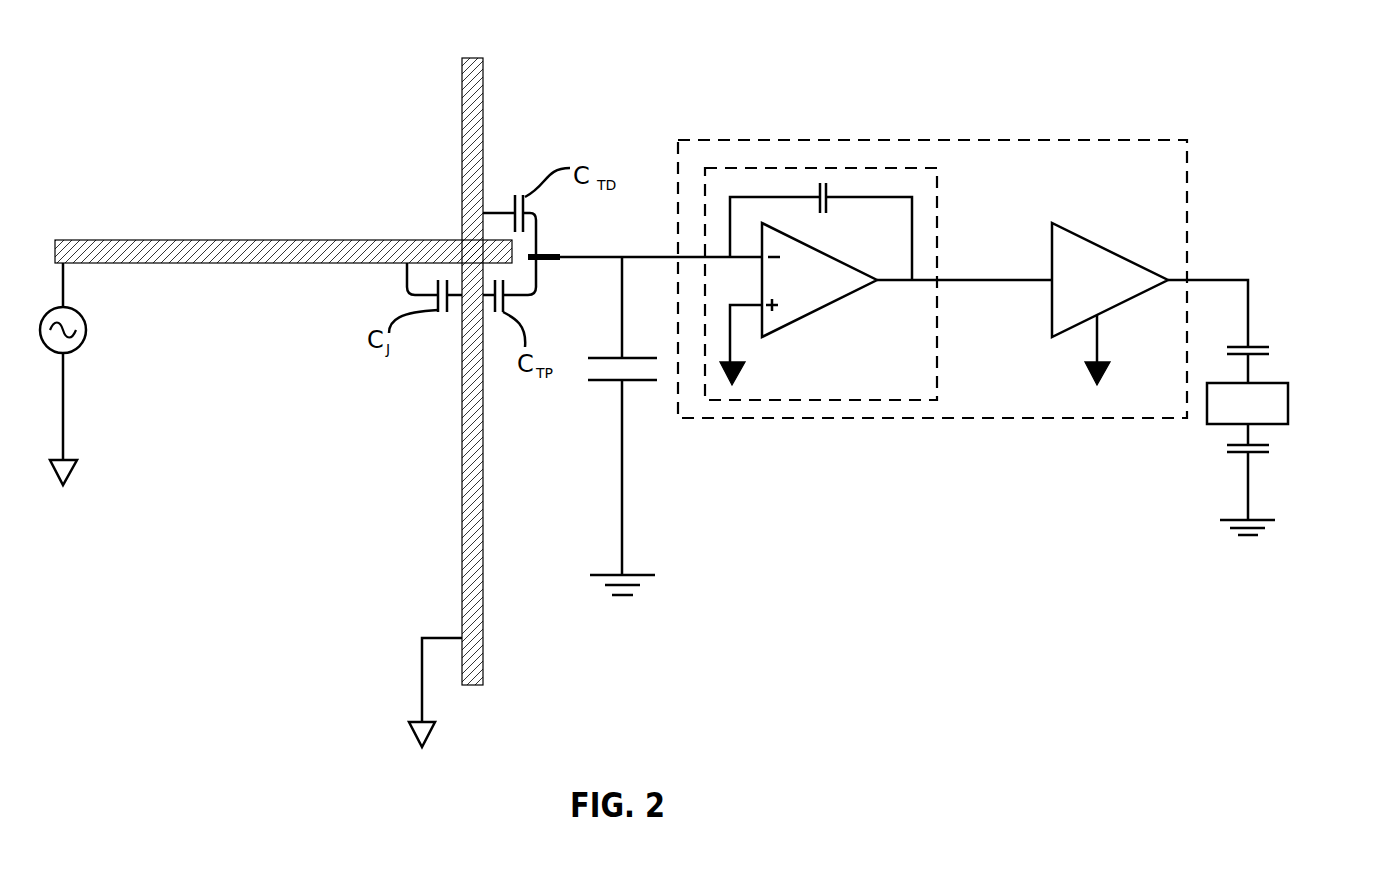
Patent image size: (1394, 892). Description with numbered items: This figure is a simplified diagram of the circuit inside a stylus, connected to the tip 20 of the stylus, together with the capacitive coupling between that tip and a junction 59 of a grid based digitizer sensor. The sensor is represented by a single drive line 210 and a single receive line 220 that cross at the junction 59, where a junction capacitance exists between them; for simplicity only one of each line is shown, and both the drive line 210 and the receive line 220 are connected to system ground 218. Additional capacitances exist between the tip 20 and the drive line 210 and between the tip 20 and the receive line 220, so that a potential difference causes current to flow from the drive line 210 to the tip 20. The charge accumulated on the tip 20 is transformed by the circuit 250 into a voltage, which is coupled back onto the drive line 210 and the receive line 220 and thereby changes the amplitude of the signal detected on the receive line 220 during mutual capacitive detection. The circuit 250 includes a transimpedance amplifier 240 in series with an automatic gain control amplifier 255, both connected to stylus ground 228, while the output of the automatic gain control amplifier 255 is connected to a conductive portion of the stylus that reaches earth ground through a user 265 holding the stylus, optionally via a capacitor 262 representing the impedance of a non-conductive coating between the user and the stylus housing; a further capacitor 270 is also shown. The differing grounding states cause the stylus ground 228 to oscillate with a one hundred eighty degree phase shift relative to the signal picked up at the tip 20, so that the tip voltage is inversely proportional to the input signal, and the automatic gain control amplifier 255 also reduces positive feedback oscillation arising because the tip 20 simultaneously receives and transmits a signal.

The drive line 210 is at (262, 248).
The receive line 220 is at (473, 497).
The junction 59 is at (472, 248).
The tip 20 is at (540, 255).
The system ground 218 is at (63, 417).
The capacitor 270 is at (640, 380).
The transimpedance amplifier 240 is at (750, 168).
The circuit 250 is at (1010, 140).
The automatic gain control amplifier 255 is at (1110, 250).
The stylus ground 228 is at (745, 372).
The capacitor 262 is at (1257, 345).
The user 265 is at (1288, 405).